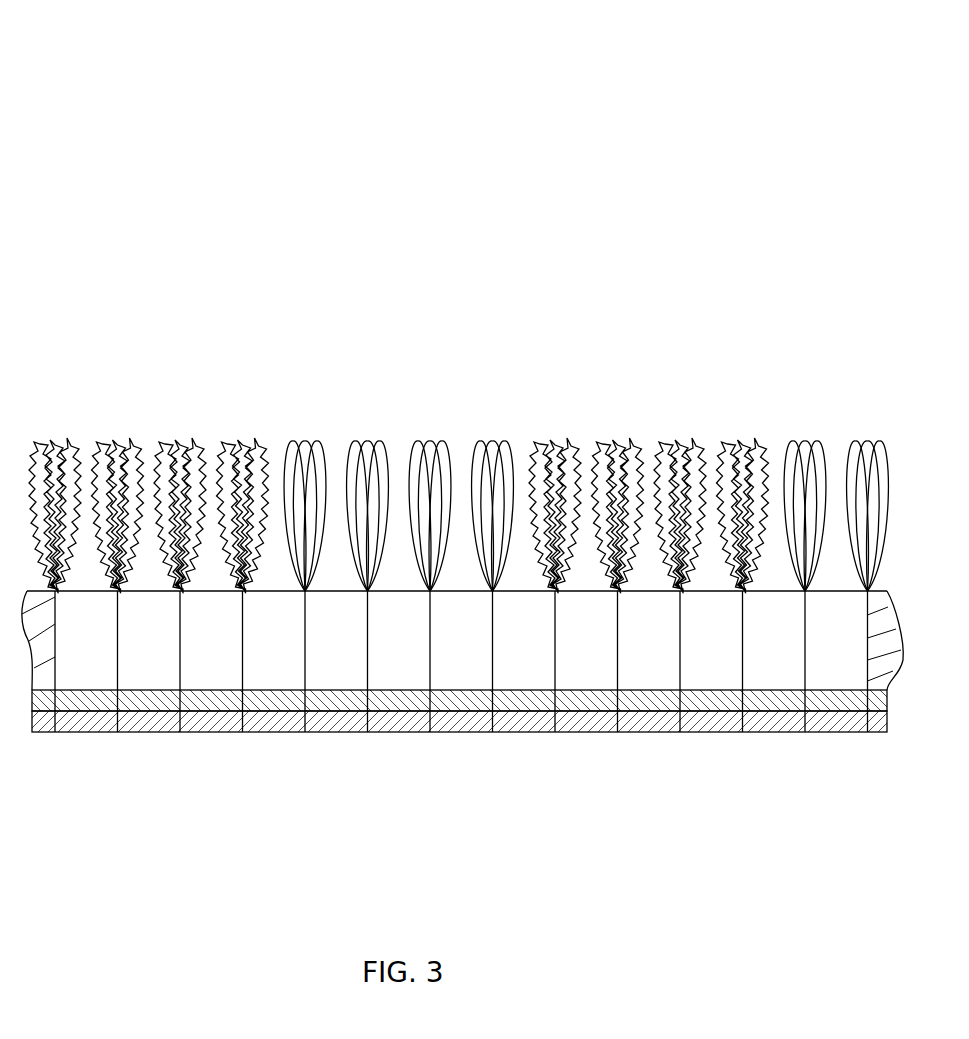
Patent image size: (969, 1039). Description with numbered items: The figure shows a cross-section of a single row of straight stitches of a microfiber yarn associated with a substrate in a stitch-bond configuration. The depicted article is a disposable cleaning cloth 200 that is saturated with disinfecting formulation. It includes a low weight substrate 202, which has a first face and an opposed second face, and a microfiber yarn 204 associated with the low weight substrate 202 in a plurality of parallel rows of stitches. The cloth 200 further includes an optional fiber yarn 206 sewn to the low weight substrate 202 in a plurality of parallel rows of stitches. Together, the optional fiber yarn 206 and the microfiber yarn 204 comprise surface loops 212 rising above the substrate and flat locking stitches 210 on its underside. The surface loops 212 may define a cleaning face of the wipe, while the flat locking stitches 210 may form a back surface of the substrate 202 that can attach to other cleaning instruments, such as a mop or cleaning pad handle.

The disposable cleaning cloth 200 is at (214, 86).
The low weight substrate 202 is at (462, 743).
The microfiber yarn 204 is at (399, 460).
The optional fiber yarn 206 is at (371, 440).
The flat locking stitches 210 is at (510, 732).
The surface loops 212 is at (608, 440).